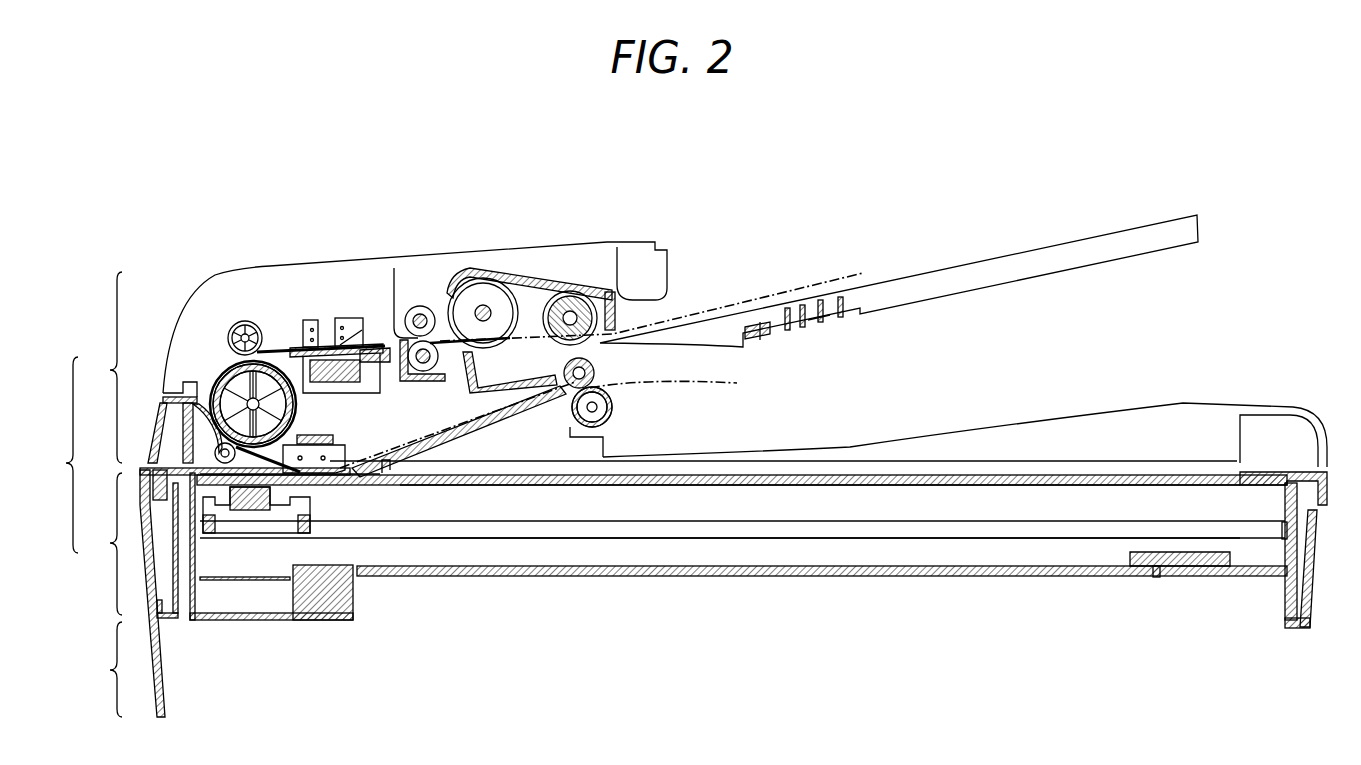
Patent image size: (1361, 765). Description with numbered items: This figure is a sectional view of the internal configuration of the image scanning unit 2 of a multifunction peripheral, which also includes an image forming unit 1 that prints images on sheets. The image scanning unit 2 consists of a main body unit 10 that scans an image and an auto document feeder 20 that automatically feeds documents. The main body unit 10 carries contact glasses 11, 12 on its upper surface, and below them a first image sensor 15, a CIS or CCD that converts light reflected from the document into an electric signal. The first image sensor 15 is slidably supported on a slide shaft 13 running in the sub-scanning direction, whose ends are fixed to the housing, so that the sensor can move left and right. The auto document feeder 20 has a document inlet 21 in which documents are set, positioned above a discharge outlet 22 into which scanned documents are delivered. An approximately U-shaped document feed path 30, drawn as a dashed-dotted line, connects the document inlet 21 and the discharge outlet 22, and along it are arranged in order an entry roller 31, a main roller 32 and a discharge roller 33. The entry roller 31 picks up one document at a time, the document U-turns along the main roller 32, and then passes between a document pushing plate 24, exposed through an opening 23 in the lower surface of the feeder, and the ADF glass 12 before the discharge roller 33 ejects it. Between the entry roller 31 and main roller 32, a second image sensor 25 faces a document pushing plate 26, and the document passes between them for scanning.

The image forming unit 1 is at (129, 593).
The image scanning unit 2 is at (65, 455).
The main body unit 10 is at (704, 527).
The contact glass 11 is at (625, 486).
The ADF glass 12 is at (317, 480).
The slide shaft 13 is at (712, 530).
The first image sensor 15 is at (270, 515).
The auto document feeder 20 is at (374, 352).
The document inlet 21 is at (1028, 252).
The discharge outlet 22 is at (1028, 432).
The opening 23 is at (354, 463).
The document pushing plate 24 is at (327, 445).
The second image sensor 25 is at (365, 396).
The document pushing plate 26 is at (323, 338).
The document feed path 30 is at (786, 270).
The entry roller 31 is at (420, 306).
The main roller 32 is at (216, 382).
The discharge roller 33 is at (587, 374).